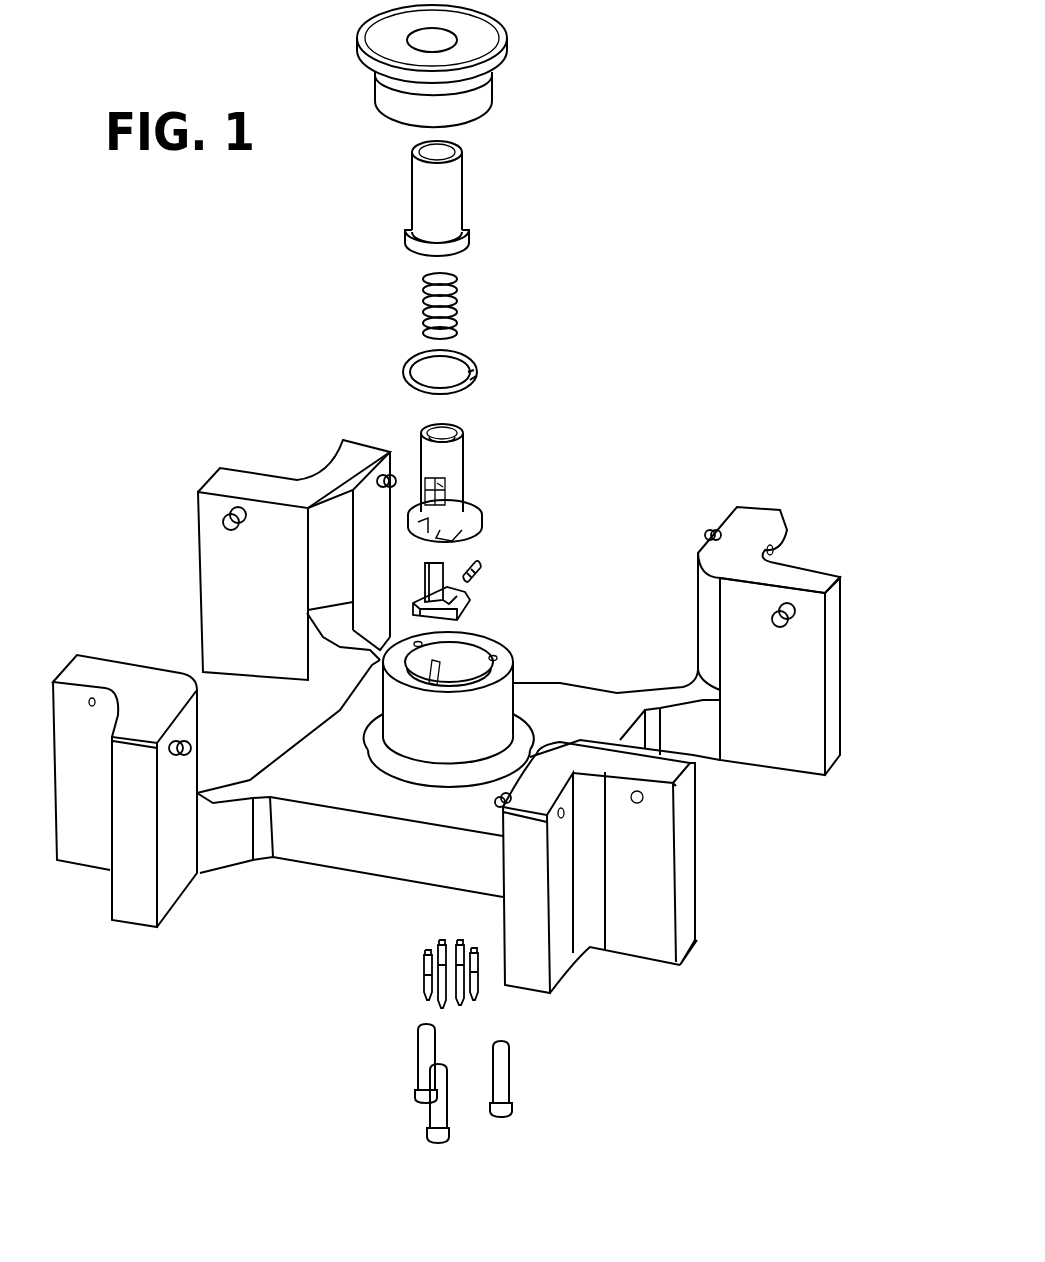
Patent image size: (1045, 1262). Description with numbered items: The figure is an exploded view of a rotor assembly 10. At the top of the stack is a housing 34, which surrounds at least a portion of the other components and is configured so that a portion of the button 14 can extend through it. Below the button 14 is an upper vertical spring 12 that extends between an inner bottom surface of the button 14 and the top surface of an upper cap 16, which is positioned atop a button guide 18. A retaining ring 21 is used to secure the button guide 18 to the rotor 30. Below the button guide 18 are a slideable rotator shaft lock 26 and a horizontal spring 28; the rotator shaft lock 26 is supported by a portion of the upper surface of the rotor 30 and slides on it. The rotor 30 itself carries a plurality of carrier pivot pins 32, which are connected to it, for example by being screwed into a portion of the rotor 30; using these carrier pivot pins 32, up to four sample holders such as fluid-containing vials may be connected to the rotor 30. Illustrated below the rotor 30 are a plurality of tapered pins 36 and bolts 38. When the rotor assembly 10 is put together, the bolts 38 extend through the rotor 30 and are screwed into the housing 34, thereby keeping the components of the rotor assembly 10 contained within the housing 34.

The rotor assembly 10 is at (772, 408).
The upper vertical spring 12 is at (459, 300).
The button 14 is at (468, 196).
The upper cap 16 is at (428, 441).
The button guide 18 is at (466, 467).
The retaining ring 21 is at (480, 364).
The slideable rotator shaft lock 26 is at (474, 601).
The horizontal spring 28 is at (481, 562).
The rotor 30 is at (703, 843).
The carrier pivot pins 32 is at (220, 516).
The housing 34 is at (497, 88).
The tapered pins 36 is at (421, 975).
The bolts 38 is at (513, 1062).